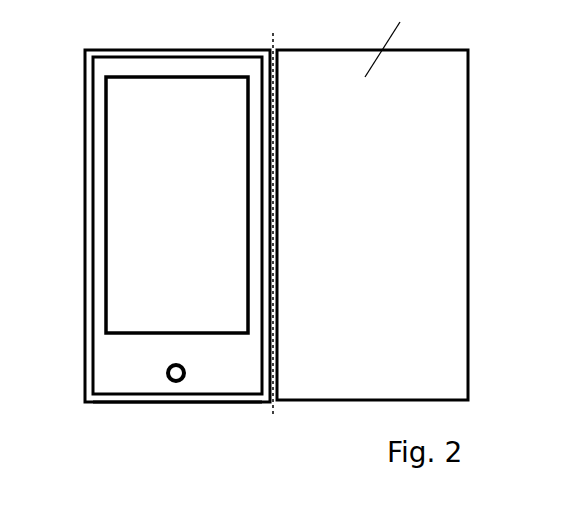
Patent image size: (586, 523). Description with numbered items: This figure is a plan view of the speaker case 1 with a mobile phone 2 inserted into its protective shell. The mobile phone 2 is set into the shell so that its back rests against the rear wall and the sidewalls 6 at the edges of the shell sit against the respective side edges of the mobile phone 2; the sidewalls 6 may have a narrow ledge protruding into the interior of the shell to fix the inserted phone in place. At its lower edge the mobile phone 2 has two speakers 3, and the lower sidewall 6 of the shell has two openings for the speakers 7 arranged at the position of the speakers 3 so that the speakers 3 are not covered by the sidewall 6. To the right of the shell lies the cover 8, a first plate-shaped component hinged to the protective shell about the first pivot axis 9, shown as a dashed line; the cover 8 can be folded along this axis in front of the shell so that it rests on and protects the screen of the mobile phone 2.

The speaker case 1 is at (482, 164).
The mobile phone 2 is at (97, 142).
The speakers 3 is at (127, 395).
The sidewall 6 is at (83, 256).
The openings for the speakers 7 is at (135, 403).
The cover 8 is at (389, 38).
The first pivot axis 9 is at (272, 403).